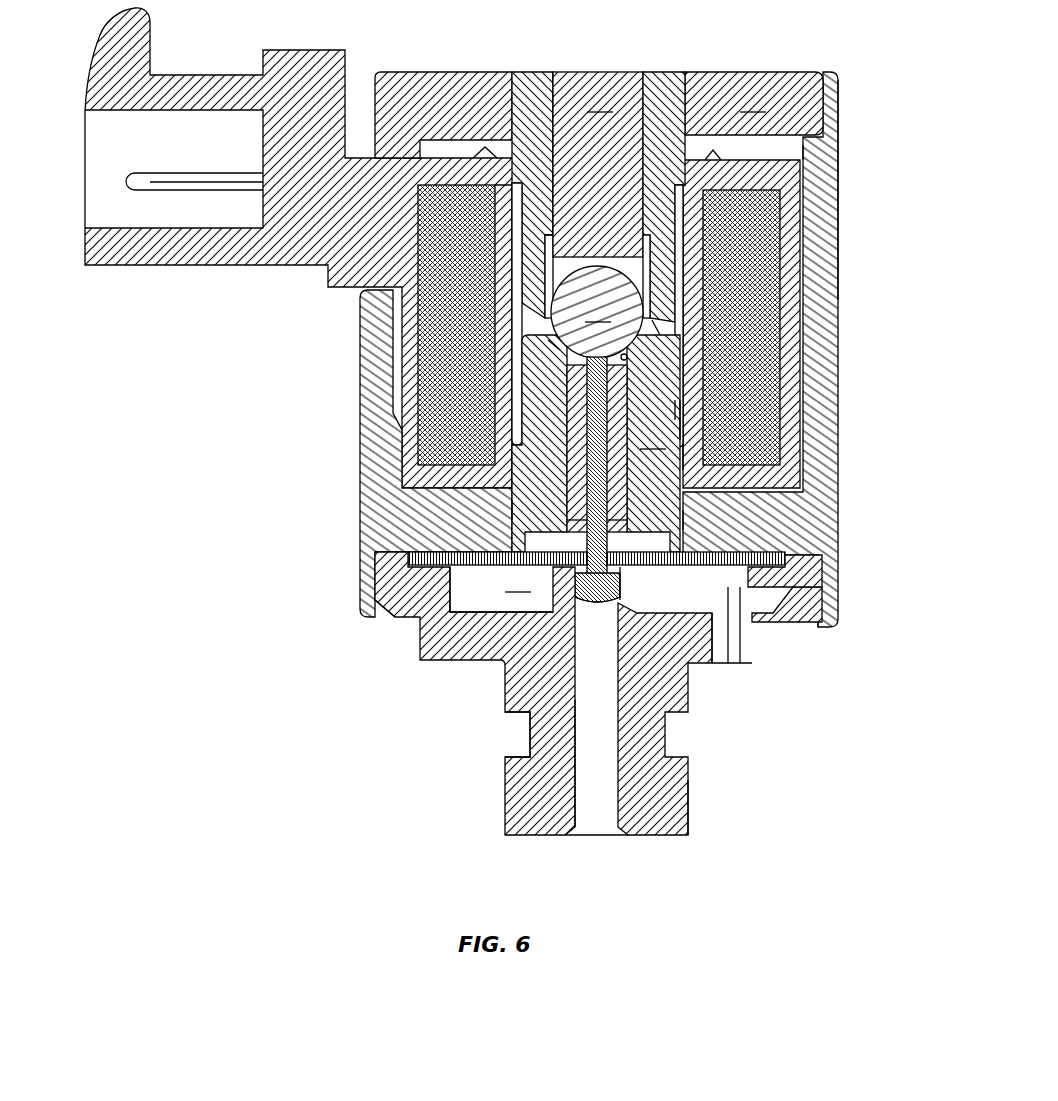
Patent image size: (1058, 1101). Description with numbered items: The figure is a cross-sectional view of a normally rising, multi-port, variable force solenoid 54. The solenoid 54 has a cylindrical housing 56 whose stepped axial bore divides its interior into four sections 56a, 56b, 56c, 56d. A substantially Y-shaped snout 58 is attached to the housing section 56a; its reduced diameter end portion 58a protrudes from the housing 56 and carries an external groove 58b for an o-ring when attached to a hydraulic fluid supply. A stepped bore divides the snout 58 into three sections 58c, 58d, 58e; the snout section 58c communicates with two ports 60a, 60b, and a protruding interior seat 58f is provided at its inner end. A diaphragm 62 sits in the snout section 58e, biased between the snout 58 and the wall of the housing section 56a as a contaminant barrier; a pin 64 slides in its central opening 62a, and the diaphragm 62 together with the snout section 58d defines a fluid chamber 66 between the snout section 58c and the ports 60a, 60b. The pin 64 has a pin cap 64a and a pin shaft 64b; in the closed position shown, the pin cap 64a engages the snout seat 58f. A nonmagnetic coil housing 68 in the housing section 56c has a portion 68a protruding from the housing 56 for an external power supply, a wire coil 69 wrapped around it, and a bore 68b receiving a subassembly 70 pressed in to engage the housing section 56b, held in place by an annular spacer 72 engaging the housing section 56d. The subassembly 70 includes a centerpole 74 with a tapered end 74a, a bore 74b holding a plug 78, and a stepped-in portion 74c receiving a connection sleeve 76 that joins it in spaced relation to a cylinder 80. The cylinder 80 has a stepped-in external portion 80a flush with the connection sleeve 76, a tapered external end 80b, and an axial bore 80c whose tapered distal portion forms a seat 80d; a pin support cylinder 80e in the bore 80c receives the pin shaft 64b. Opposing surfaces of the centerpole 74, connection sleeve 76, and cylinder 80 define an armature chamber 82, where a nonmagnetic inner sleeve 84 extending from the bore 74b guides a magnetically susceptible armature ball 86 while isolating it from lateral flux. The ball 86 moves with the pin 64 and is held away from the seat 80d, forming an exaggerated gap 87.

The solenoid 54 is at (859, 89).
The housing 56 is at (815, 175).
The housing section 56a is at (822, 587).
The housing section 56b is at (680, 518).
The housing section 56c is at (803, 153).
The housing section 56d is at (820, 88).
The snout 58 is at (697, 706).
The reduced diameter end portion 58a is at (678, 826).
The external groove 58b is at (505, 757).
The snout section 58c is at (575, 785).
The snout section 58d is at (450, 592).
The snout section 58e is at (782, 553).
The snout seat 58f is at (633, 606).
The port 60a is at (381, 620).
The port 60b is at (722, 612).
The diaphragm 62 is at (672, 567).
The opening 62a is at (610, 548).
The pin 64 is at (574, 590).
The pin cap 64a is at (580, 599).
The pin shaft 64b is at (587, 538).
The fluid chamber 66 is at (596, 572).
The coil housing 68 is at (350, 287).
The coil housing portion 68a is at (292, 60).
The bore 68b is at (520, 403).
The wire coil 69 is at (403, 410).
The subassembly 70 is at (665, 88).
The annular spacer 72 is at (754, 103).
The centerpole 74 is at (542, 75).
The tapered end 74a is at (538, 318).
The centerpole bore 74b is at (555, 76).
The stepped-in portion 74c is at (517, 185).
The connection sleeve 76 is at (680, 228).
The plug 78 is at (598, 164).
The cylinder 80 is at (596, 443).
The external portion 80a is at (798, 423).
The tapered external end 80b is at (641, 341).
The axial bore 80c is at (677, 410).
The seat 80d is at (628, 357).
The pin support cylinder 80e is at (517, 510).
The armature chamber 82 is at (452, 388).
The inner sleeve 84 is at (548, 270).
The armature ball 86 is at (597, 312).
The gap 87 is at (662, 326).